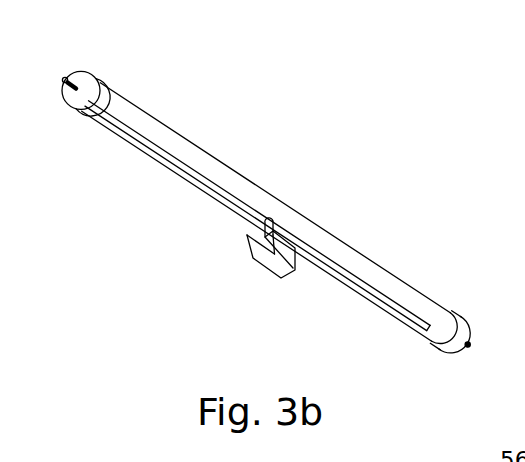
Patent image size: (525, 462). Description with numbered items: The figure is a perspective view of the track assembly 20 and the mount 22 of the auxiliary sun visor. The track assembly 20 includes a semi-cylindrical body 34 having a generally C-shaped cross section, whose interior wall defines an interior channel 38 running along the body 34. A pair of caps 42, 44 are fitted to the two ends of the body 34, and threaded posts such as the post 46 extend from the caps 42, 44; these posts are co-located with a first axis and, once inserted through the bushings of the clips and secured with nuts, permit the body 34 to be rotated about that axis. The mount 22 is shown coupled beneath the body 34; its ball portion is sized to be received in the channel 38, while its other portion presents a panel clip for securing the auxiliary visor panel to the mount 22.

The track assembly 20 is at (295, 176).
The mount 22 is at (231, 255).
The semi-cylindrical body 34 is at (381, 275).
The interior channel 38 is at (406, 321).
The cap 42 is at (85, 85).
The cap 44 is at (465, 328).
The threaded post 46 is at (77, 92).